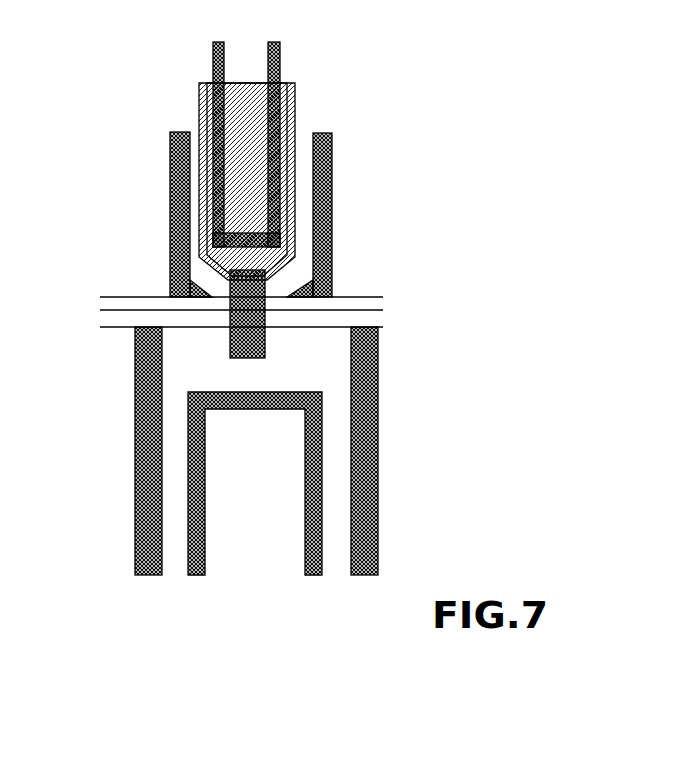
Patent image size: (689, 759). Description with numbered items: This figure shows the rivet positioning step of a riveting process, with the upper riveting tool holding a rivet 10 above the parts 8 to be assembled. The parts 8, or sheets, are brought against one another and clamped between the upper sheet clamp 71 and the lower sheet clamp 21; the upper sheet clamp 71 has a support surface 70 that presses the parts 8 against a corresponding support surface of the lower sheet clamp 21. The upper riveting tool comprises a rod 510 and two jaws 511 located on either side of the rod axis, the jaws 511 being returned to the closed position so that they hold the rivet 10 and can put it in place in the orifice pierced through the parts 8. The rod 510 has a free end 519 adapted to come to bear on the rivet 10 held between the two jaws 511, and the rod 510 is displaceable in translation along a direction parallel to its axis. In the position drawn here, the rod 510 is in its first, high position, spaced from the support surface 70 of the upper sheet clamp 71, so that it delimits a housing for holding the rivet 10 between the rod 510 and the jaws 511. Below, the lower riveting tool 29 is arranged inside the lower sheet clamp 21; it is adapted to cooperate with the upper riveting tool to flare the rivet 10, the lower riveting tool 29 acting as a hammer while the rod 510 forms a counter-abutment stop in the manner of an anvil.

The rod 510 is at (236, 98).
The free end 519 is at (241, 243).
The upper sheet clamp 71 is at (167, 185).
The jaws 511 is at (333, 230).
The rivet 10 is at (233, 357).
The parts 8 is at (383, 295).
The support surface 70 is at (193, 296).
The lower sheet clamp 21 is at (133, 448).
The lower riveting tool 29 is at (255, 483).